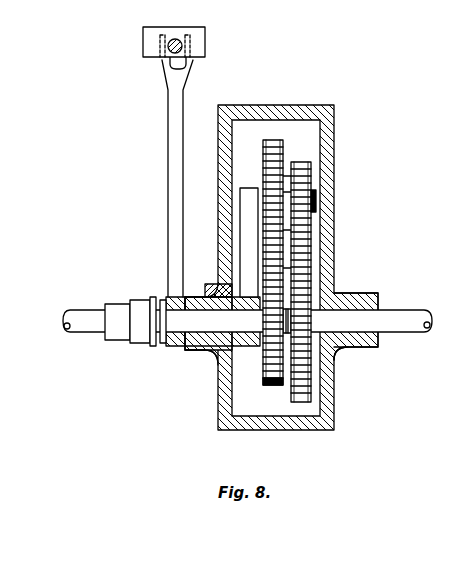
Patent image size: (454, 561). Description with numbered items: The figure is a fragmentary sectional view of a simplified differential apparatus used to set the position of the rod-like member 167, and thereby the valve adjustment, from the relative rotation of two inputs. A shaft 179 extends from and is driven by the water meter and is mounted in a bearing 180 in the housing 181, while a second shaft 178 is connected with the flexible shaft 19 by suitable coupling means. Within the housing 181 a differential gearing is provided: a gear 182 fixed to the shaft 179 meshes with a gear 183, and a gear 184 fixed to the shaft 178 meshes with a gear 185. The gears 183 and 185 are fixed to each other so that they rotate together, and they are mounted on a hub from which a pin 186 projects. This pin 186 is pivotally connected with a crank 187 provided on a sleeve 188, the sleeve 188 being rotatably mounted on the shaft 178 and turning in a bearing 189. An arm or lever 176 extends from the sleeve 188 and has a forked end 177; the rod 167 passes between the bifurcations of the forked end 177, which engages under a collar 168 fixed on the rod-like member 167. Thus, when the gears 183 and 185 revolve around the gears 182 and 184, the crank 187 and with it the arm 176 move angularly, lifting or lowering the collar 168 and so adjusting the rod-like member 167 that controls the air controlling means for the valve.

The flexible shaft 19 is at (97, 322).
The rod-like member 167 is at (180, 41).
The collar 168 is at (152, 45).
The arm 176 is at (174, 128).
The forked end 177 is at (193, 60).
The shaft 178 is at (212, 352).
The shaft 179 is at (380, 321).
The bearing 180 is at (350, 305).
The housing 181 is at (327, 210).
The gear 182 is at (325, 360).
The gear 183 is at (313, 165).
The gear 184 is at (270, 386).
The gear 185 is at (276, 150).
The pin 186 is at (258, 192).
The crank 187 is at (248, 216).
The sleeve 188 is at (183, 346).
The bearing 189 is at (218, 292).